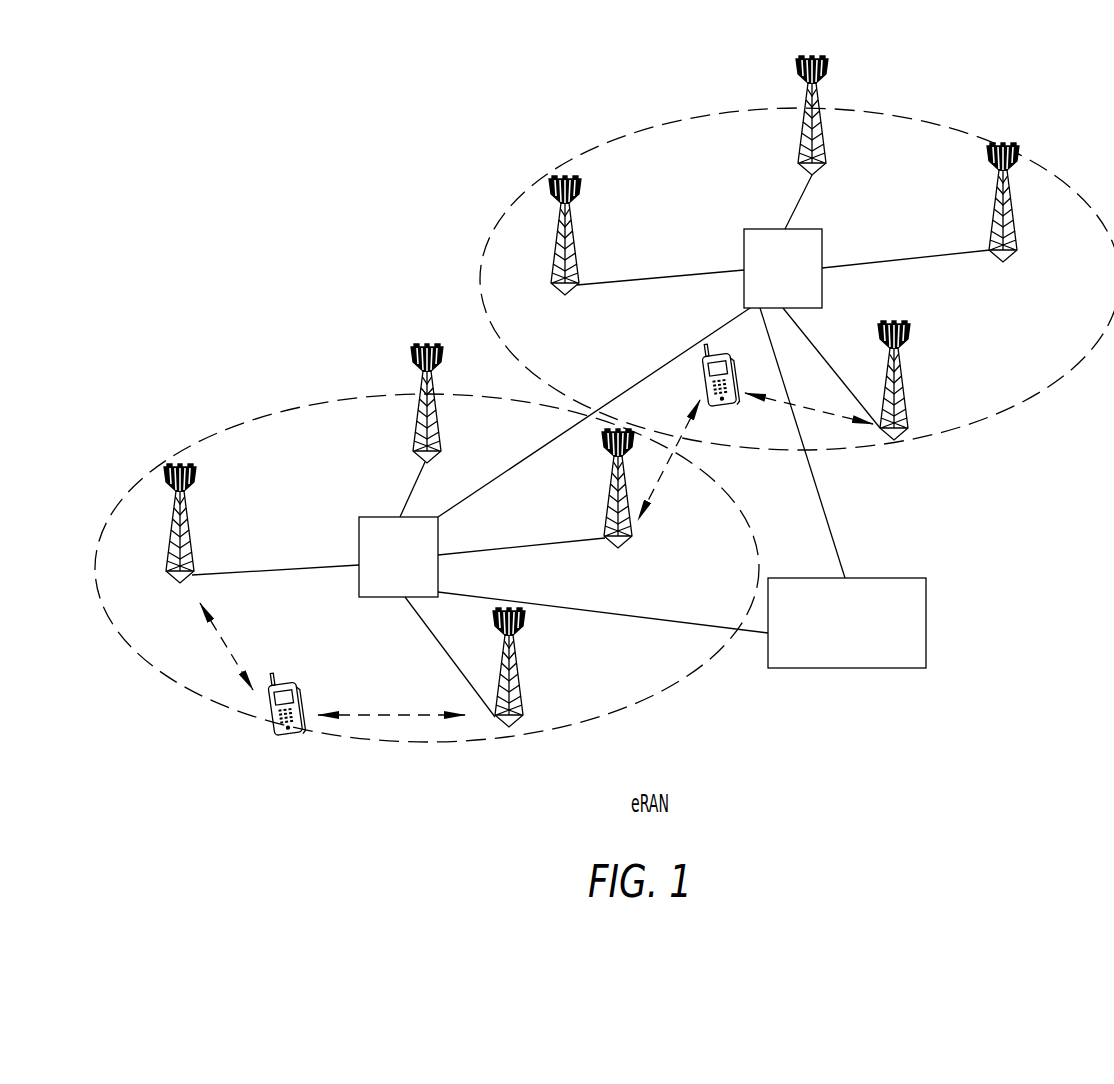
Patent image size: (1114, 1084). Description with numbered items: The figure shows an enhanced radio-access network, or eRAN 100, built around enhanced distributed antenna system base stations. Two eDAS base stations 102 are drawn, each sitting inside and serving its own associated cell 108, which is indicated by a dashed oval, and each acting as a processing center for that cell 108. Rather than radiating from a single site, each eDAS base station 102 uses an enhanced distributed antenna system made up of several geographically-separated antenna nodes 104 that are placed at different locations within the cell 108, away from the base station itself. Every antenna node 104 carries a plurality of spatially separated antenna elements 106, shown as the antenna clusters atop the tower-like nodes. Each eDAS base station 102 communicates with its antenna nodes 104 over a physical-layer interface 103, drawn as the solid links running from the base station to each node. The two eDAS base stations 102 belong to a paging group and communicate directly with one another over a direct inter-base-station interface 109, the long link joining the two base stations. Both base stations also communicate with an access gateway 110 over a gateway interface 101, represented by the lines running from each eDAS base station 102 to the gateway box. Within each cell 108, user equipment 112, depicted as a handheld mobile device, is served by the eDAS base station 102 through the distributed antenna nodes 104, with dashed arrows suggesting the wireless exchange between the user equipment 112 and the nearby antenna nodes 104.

The enhanced radio-access network (eRAN) 100 is at (1038, 706).
The S1 interface 101 is at (829, 519).
The eDAS base station 102 is at (744, 246).
The X3 interface 103 is at (630, 283).
The antenna node 104 is at (821, 134).
The antenna element 106 is at (814, 58).
The cell 108 is at (983, 378).
The X2+ interface 109 is at (538, 450).
The access gateway 110 is at (896, 578).
The user equipment (UE) 112 is at (702, 378).